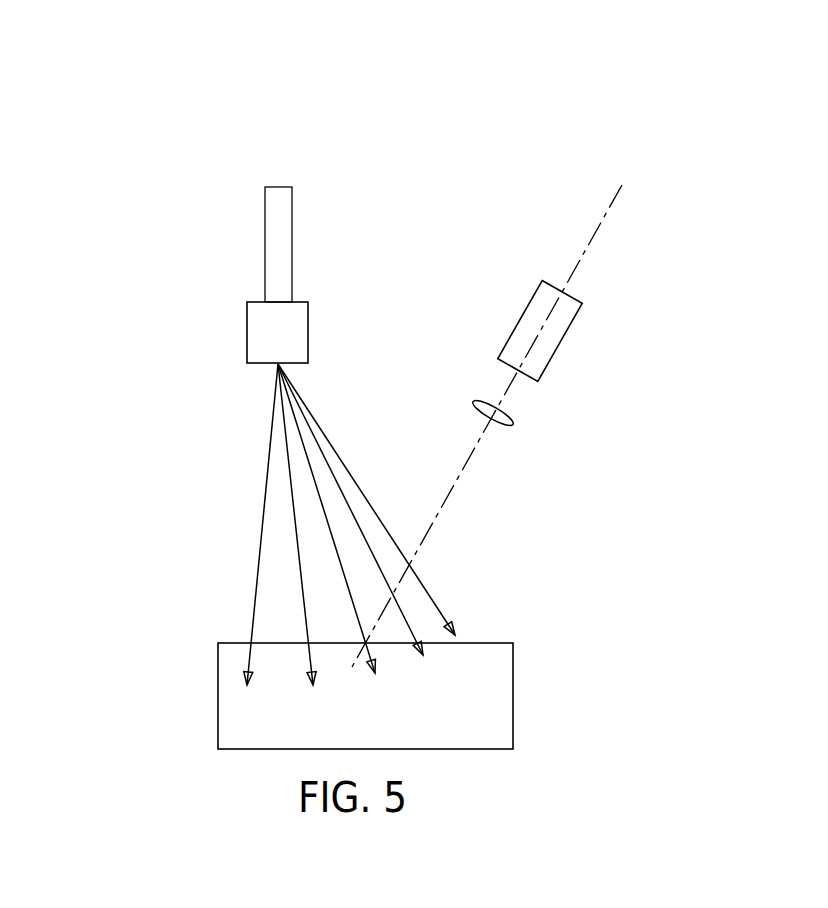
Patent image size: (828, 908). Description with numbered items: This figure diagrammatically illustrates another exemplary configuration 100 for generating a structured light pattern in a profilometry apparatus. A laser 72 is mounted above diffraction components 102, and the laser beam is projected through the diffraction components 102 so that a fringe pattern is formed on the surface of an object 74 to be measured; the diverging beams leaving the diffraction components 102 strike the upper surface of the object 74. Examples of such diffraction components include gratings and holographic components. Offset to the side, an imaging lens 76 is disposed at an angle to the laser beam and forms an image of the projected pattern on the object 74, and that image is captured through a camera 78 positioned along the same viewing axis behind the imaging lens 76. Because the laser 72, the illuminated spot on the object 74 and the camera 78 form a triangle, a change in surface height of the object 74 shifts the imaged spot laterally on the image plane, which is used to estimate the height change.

The exemplary configuration 100 is at (203, 104).
The laser 72 is at (292, 245).
The diffraction components 102 is at (255, 338).
The camera 78 is at (558, 329).
The imaging lens 76 is at (510, 423).
The object 74 is at (508, 700).